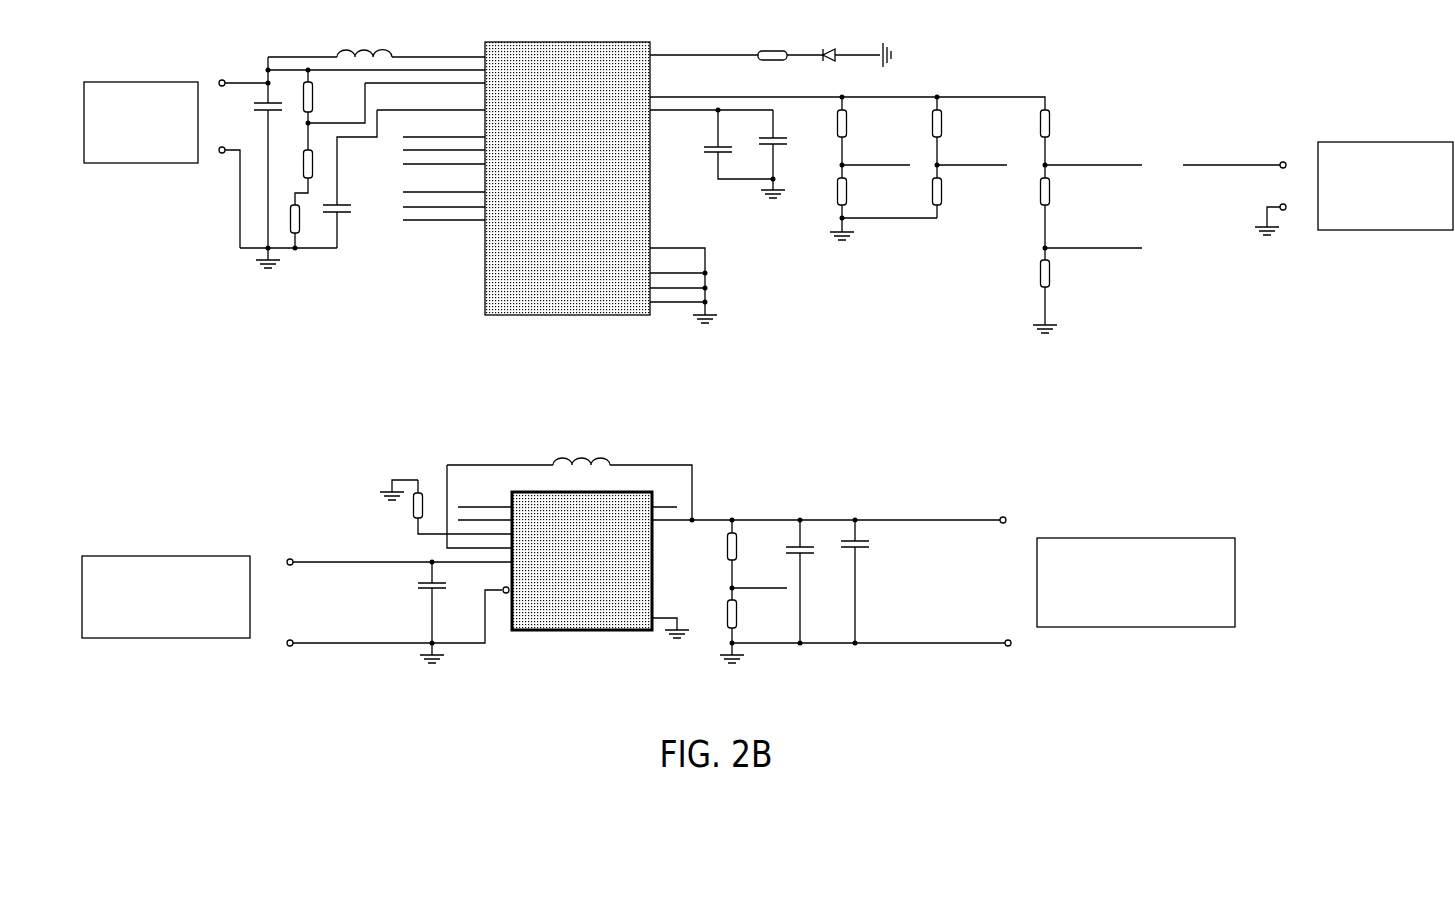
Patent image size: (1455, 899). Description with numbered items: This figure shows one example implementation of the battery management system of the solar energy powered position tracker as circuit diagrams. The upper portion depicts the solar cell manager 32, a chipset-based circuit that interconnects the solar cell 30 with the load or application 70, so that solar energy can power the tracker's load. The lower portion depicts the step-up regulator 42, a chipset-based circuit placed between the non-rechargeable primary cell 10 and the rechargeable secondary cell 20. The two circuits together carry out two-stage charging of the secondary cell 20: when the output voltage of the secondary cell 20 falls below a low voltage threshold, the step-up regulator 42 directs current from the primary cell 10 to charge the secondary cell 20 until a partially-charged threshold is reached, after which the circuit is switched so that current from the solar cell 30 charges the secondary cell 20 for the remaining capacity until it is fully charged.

The primary battery cell 10 is at (166, 597).
The rechargeable battery cell 20 is at (1136, 582).
The solar cell 30 is at (141, 122).
The solar cell manager 32 is at (1178, 77).
The step-up regulator 42 is at (1020, 477).
The load 70 is at (1385, 186).